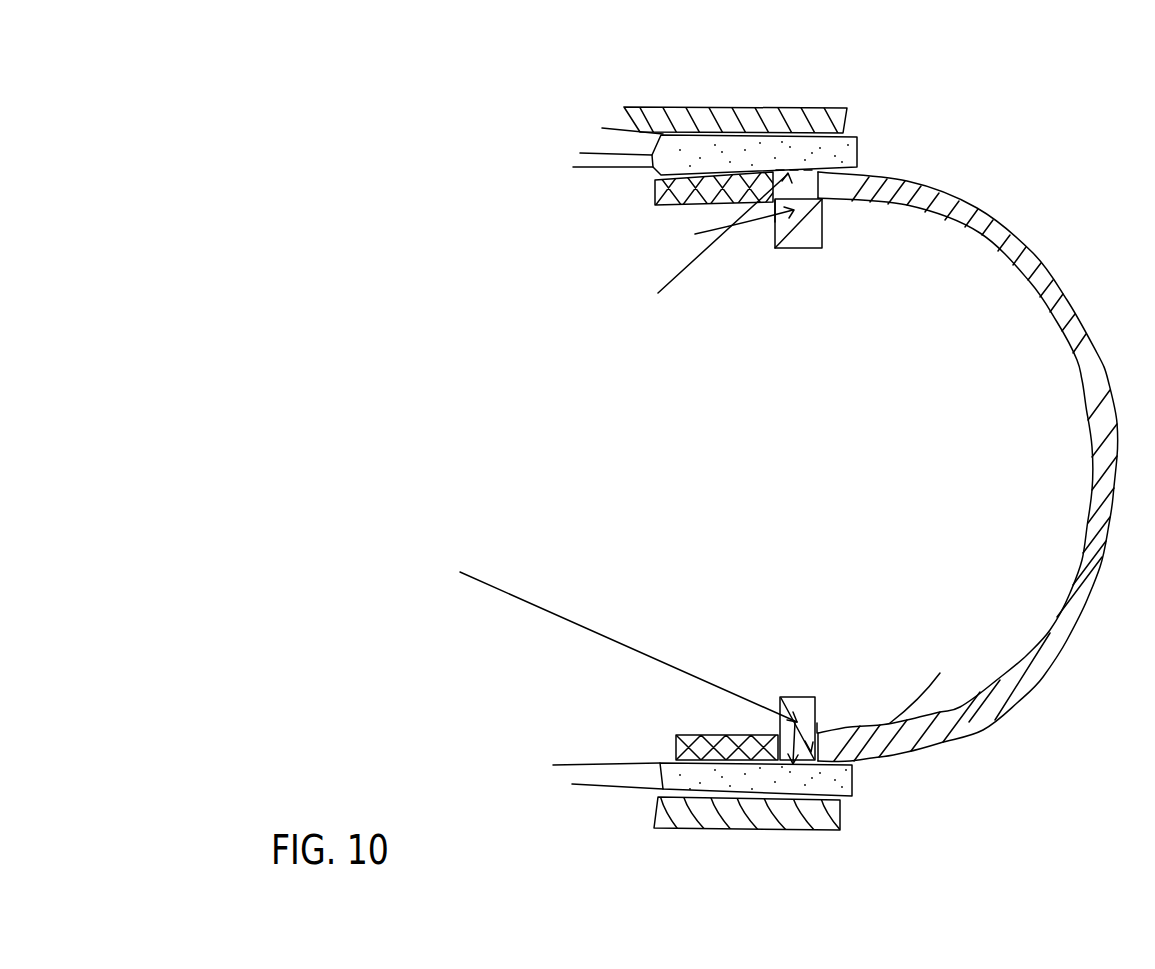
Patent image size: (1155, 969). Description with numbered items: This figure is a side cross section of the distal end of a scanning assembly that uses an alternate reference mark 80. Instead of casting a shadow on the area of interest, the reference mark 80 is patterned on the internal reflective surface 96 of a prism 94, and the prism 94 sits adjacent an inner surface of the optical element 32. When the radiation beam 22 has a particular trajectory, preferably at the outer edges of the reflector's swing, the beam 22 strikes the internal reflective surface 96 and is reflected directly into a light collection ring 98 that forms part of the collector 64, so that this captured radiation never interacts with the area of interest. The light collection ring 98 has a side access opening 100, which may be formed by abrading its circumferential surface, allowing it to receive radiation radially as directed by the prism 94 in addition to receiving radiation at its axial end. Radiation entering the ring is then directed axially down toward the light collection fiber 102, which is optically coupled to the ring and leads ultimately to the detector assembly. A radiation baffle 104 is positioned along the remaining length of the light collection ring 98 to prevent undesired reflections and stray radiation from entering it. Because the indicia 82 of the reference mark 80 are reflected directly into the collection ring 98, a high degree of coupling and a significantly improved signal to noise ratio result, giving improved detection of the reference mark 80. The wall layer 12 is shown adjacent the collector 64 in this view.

The housing wall 12 is at (693, 115).
The collector 64 is at (737, 145).
The light collection ring 98 is at (830, 142).
The optical element 32 is at (907, 193).
The light collection fiber 102 is at (592, 160).
The radiation baffle 104 is at (655, 205).
The side access opening 100 is at (807, 465).
The internal reflective surface 96 is at (820, 205).
The prism 94 is at (820, 249).
The reference mark 80 is at (775, 222).
The indicia 82 is at (717, 252).
The radiation beam 22 is at (617, 647).